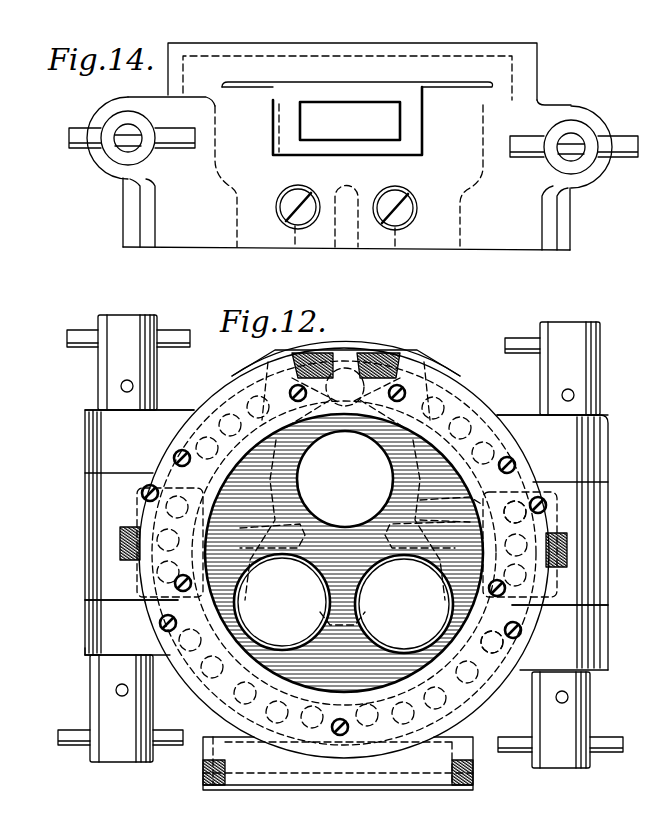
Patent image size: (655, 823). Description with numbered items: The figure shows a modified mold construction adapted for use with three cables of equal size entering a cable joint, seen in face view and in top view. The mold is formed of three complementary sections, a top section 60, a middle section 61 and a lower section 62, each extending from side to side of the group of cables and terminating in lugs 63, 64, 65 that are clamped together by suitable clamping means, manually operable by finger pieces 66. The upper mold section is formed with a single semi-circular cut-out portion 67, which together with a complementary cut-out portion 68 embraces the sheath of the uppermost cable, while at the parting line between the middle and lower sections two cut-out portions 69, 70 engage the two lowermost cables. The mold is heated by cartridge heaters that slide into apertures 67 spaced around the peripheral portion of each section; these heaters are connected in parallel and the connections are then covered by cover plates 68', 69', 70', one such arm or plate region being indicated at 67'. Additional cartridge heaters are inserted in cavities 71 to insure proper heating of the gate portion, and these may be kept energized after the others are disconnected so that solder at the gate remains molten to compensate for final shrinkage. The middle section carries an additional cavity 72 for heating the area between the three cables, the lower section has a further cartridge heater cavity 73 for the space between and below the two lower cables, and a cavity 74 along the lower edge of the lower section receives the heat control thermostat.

In FIG. 14, the top section 60 is at (194, 233).
In FIG. 12, the top section 60 is at (171, 409).
In FIG. 12, the middle section 61 is at (85, 505).
In FIG. 12, the lower section 62 is at (85, 655).
In FIG. 14, the lug 63 is at (107, 110).
In FIG. 12, the lug 63 is at (93, 437).
In FIG. 12, the lug 64 is at (93, 553).
In FIG. 12, the lug 65 is at (93, 618).
In FIG. 14, the finger pieces 66 is at (116, 152).
In FIG. 12, the finger pieces 66 is at (107, 353).
In FIG. 12, the semi-circular cut-out portion / heater apertures 67 is at (344, 560).
In FIG. 12, the cam arm 67' is at (451, 507).
In FIG. 12, the complementary cut-out portion 68 is at (344, 553).
In FIG. 12, the cover plate 68' is at (361, 365).
In FIG. 12, the cut-out portion 69 is at (343, 603).
In FIG. 12, the cover plate 69' is at (549, 510).
In FIG. 12, the cut-out portion 70 is at (343, 605).
In FIG. 12, the cover plate 70' is at (524, 642).
In FIG. 12, the cavities 71 is at (360, 348).
In FIG. 12, the additional cavity 72 is at (365, 532).
In FIG. 12, the cartridge heater cavity 73 is at (355, 622).
In FIG. 12, the thermostat cavity 74 is at (246, 777).